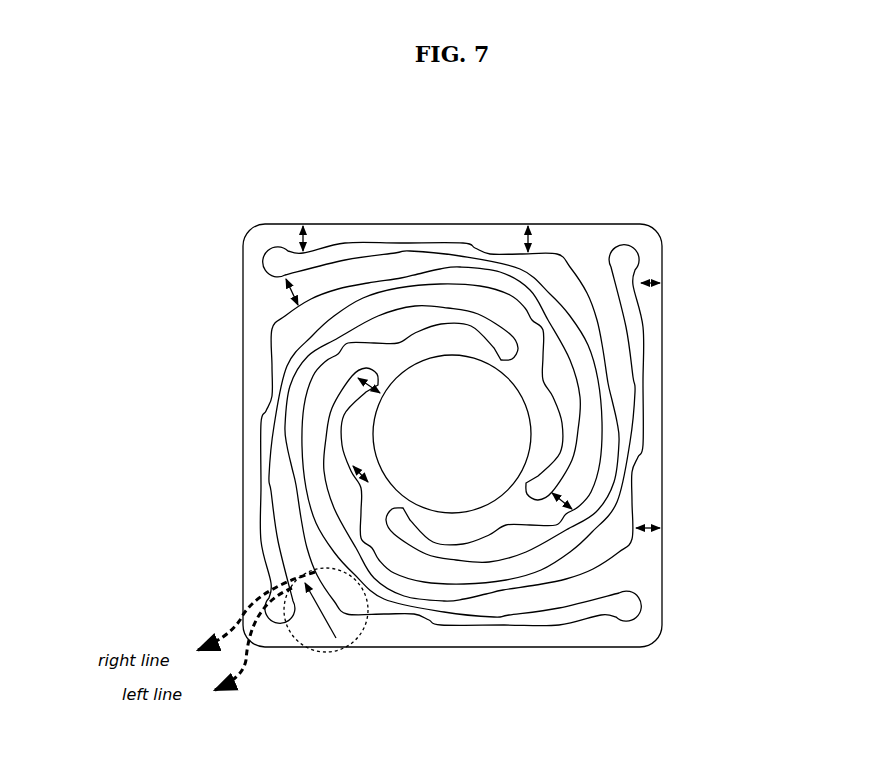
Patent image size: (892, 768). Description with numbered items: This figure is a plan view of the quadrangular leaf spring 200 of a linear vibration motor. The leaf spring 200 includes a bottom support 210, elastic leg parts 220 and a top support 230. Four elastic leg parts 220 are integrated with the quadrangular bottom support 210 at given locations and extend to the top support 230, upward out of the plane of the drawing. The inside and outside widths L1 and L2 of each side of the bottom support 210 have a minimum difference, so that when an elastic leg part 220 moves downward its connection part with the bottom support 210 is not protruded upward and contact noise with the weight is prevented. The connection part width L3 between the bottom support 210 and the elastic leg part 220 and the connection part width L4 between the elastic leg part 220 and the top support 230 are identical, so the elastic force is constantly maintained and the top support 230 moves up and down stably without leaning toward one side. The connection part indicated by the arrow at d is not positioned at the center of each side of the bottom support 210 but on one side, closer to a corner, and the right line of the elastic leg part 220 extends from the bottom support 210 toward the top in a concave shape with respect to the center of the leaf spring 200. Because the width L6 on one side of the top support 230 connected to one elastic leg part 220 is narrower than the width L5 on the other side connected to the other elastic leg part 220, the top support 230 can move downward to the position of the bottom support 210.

The quadrangular leaf spring 200 is at (349, 144).
The bottom support 210 is at (470, 223).
The elastic leg part 220 is at (405, 250).
The top support 230 is at (457, 533).
The inside width of side of bottom support L1 is at (300, 236).
The outside width of side of bottom support L2 is at (531, 232).
The connection part width of bottom support and elastic leg part L3 is at (284, 292).
The connection part width of elastic leg part and top support L4 is at (567, 496).
The width on other side of top support L5 is at (362, 478).
The width on one side of top support L6 is at (376, 388).
The connection part d is at (328, 652).